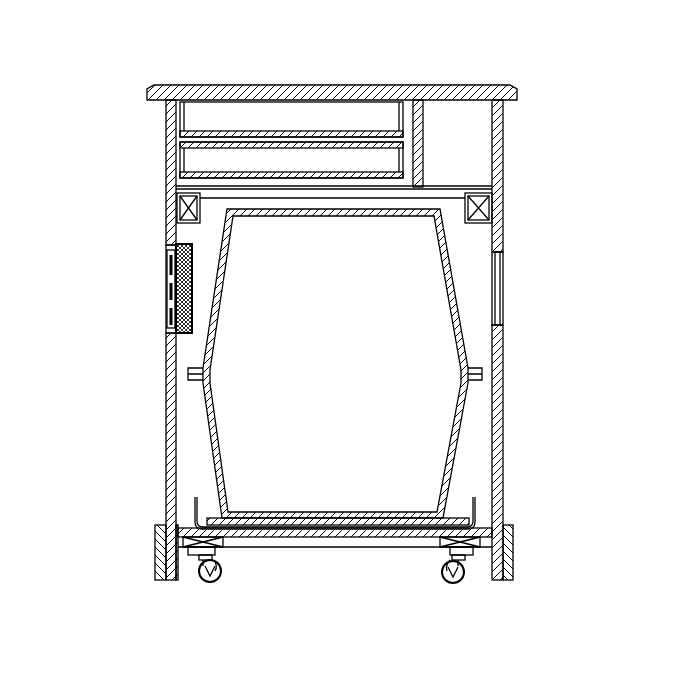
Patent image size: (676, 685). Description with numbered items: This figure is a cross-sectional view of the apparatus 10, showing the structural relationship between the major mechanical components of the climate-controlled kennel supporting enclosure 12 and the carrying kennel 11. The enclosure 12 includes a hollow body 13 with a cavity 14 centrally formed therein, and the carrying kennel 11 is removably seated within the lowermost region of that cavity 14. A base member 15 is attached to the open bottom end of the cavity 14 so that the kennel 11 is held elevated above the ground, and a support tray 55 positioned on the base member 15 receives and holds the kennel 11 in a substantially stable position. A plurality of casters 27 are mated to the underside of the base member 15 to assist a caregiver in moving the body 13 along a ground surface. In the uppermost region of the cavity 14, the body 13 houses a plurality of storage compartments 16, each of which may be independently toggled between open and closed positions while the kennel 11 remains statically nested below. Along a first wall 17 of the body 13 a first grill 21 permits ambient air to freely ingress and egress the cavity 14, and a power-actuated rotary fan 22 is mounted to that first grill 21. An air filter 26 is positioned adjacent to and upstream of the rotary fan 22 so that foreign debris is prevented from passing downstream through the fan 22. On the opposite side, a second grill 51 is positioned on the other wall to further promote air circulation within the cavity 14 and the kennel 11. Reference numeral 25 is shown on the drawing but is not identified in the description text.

The apparatus 10 is at (562, 136).
The carrying kennel 11 is at (463, 352).
The kennel supporting enclosure 12 is at (158, 182).
The hollow body 13 is at (494, 424).
The cavity 14 is at (199, 484).
The base member 15 is at (490, 531).
The storage compartments 16 is at (337, 160).
The first wall 17 is at (170, 412).
The first grill 21 is at (168, 307).
The rotary fan 22 is at (168, 262).
The opening 25 is at (170, 236).
The air filter 26 is at (177, 333).
The casters 27 is at (213, 580).
The second grill 51 is at (500, 280).
The support tray 55 is at (477, 503).